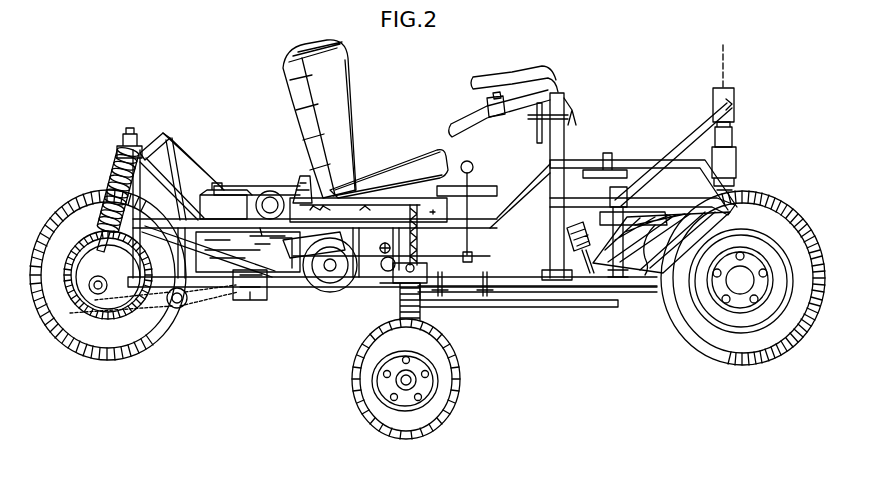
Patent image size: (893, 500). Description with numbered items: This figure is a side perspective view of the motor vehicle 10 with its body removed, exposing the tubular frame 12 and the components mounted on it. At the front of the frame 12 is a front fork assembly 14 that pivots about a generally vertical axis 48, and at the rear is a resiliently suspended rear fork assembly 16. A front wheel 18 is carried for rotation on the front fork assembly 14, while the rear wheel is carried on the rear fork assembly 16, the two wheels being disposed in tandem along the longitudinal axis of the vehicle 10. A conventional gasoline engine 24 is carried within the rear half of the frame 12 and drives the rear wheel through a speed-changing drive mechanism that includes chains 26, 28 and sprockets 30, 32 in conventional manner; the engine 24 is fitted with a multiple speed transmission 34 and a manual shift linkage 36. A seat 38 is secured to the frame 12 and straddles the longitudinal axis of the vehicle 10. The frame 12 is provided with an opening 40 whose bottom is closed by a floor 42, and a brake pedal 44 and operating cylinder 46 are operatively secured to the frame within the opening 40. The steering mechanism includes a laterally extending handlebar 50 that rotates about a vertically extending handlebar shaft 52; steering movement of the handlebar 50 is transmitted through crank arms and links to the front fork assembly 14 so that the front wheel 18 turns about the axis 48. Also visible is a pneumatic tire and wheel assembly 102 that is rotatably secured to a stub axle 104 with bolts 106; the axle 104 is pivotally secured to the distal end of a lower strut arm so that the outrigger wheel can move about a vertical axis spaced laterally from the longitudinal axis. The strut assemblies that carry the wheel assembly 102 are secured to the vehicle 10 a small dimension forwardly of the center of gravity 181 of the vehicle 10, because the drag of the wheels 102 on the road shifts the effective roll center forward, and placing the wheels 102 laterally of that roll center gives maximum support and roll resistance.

The motor vehicle 10 is at (609, 83).
The tubular frame 12 is at (248, 188).
The front fork assembly 14 is at (738, 160).
The rear fork assembly 16 is at (115, 177).
The front wheel 18 is at (778, 203).
The gasoline engine 24 is at (295, 198).
The chain 26 is at (222, 300).
The chain 28 is at (150, 307).
The sprocket 30 is at (183, 306).
The sprocket 32 is at (88, 302).
The multiple speed transmission 34 is at (300, 257).
The manual shift linkage 36 is at (468, 161).
The seat 38 is at (345, 78).
The opening 40 is at (522, 193).
The floor 42 is at (583, 297).
The brake pedal 44 is at (577, 233).
The operating cylinder 46 is at (645, 230).
The vertical axis 48 is at (727, 55).
The handlebar 50 is at (542, 76).
The handlebar shaft 52 is at (563, 108).
The pneumatic tire and wheel assembly 102 is at (425, 385).
The stub axle 104 is at (405, 390).
The bolts 106 is at (390, 394).
The center of gravity 181 is at (382, 252).